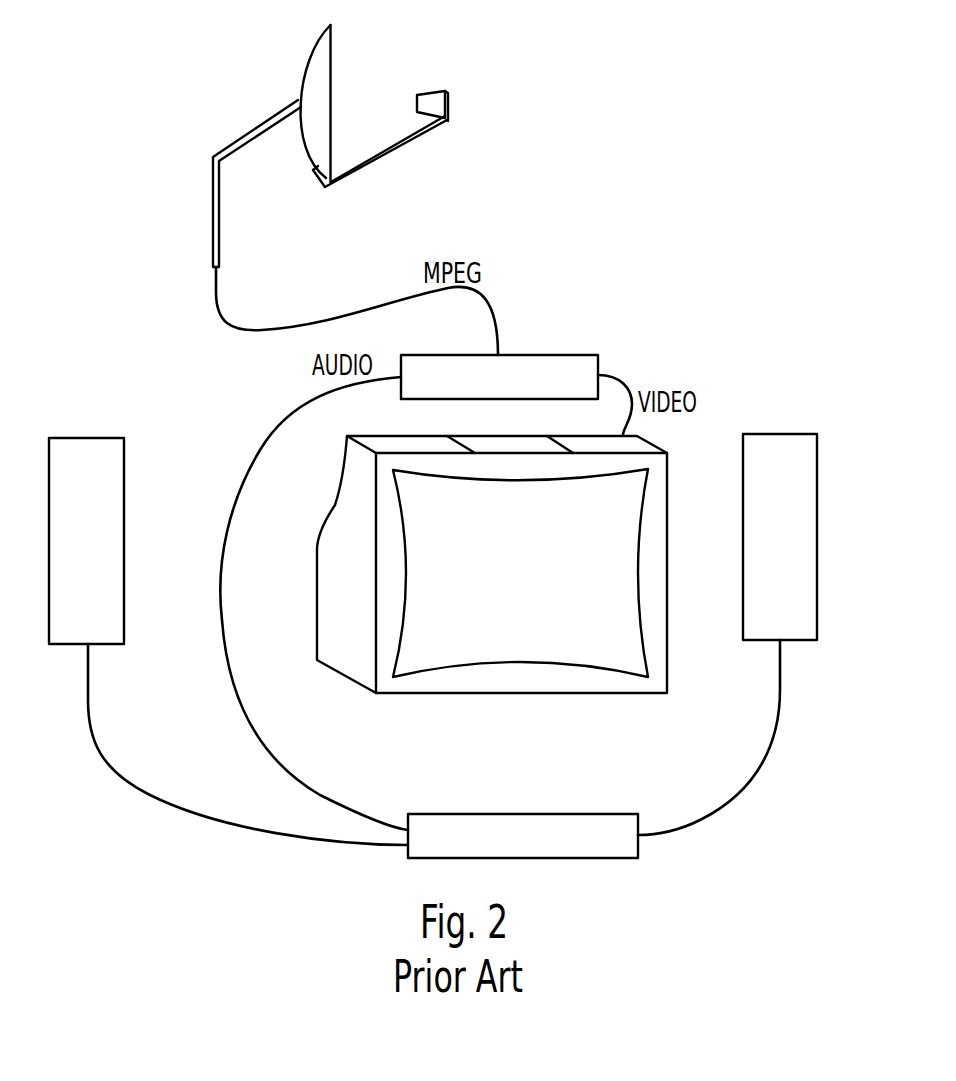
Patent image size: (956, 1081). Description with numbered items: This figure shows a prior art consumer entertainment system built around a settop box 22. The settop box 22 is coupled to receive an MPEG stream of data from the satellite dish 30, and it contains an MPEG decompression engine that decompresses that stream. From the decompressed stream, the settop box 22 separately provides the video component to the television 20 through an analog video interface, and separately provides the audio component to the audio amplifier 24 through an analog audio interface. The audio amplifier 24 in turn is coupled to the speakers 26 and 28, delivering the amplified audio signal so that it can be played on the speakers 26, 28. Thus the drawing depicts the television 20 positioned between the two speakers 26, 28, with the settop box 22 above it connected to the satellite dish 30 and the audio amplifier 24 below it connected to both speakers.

The television 20 is at (667, 683).
The settop box 22 is at (581, 354).
The audio amplifier 24 is at (534, 813).
The speaker 26 is at (124, 470).
The speaker 28 is at (817, 493).
The satellite dish 30 is at (331, 48).